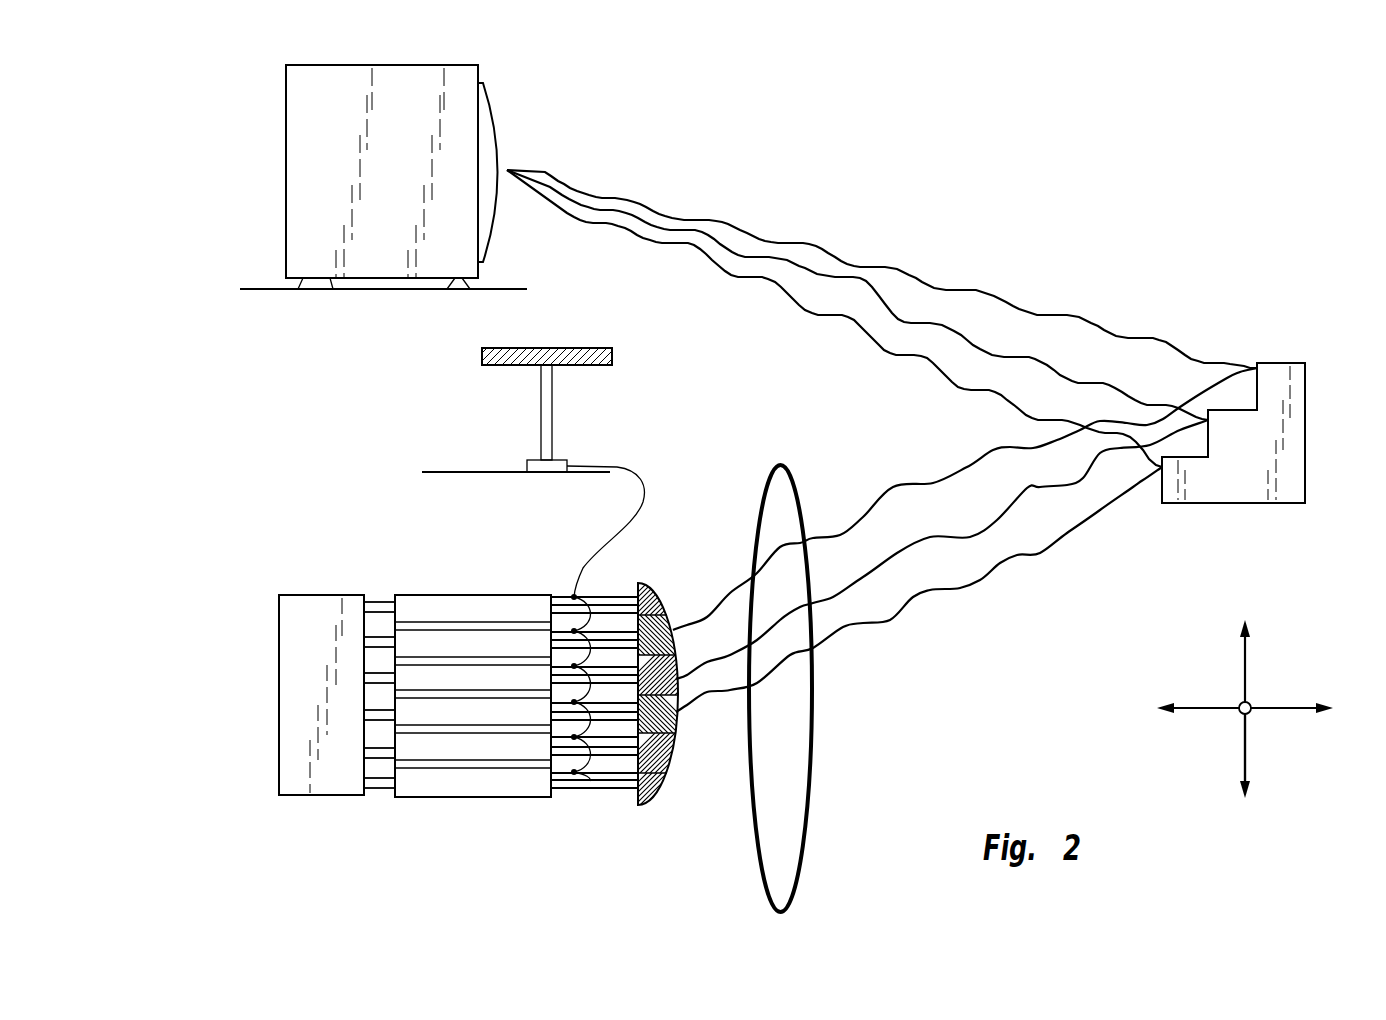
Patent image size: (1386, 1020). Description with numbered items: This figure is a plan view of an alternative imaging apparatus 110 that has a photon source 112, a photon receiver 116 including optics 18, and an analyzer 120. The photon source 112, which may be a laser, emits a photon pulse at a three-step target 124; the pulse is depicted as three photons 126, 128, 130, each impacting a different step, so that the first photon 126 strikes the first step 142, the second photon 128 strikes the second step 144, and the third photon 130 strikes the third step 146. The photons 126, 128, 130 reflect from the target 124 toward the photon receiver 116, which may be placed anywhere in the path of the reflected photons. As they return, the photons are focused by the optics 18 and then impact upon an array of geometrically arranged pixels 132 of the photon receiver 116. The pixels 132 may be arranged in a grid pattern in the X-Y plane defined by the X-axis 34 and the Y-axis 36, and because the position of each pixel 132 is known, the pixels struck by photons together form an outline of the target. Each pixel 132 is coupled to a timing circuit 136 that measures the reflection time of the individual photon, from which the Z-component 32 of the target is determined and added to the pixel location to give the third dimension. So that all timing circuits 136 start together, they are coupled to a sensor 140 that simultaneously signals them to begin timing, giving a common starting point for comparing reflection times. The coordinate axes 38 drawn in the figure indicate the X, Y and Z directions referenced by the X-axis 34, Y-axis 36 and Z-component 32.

The imaging apparatus 110 is at (1162, 205).
The photon source 112 is at (400, 184).
The photon receiver 116 is at (637, 797).
The analyzer 120 is at (297, 660).
The target 124 is at (1262, 459).
The first photon 126 is at (930, 282).
The second photon 128 is at (960, 330).
The third photon 130 is at (917, 358).
The pixels 132 is at (684, 667).
The timing circuits 136 is at (455, 602).
The sensor 140 is at (510, 360).
The first step 142 is at (1260, 370).
The second step 144 is at (1208, 420).
The third step 146 is at (1167, 470).
The optics 18 is at (803, 755).
The Z-component 32 is at (1288, 705).
The X-axis 34 is at (1240, 713).
The Y-axis 36 is at (1247, 747).
The coordinate system 38 is at (1192, 665).